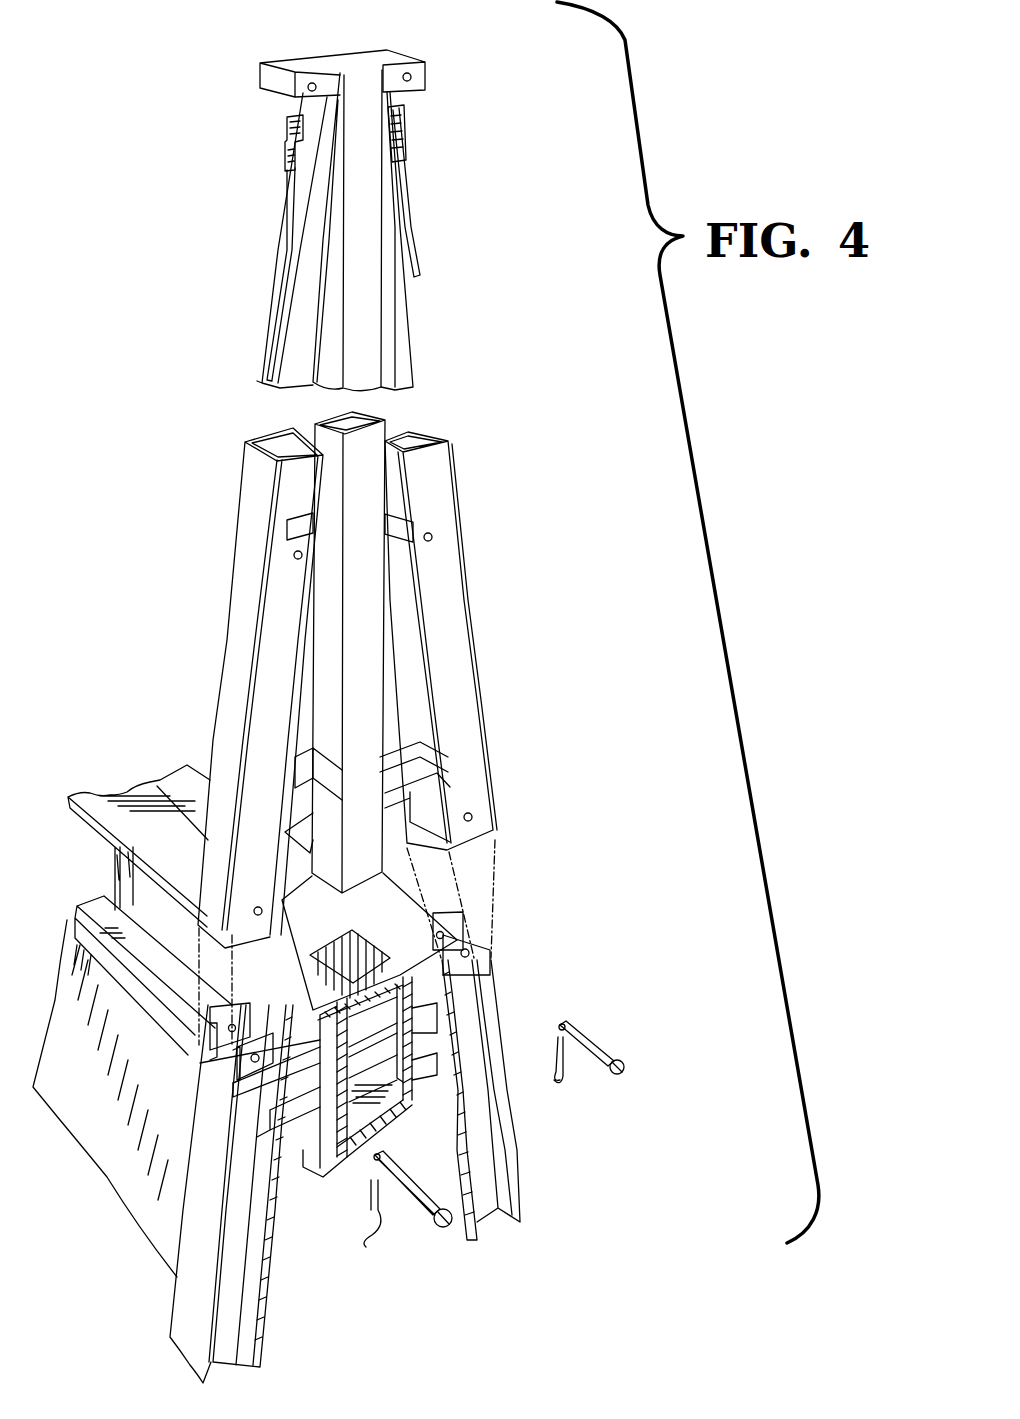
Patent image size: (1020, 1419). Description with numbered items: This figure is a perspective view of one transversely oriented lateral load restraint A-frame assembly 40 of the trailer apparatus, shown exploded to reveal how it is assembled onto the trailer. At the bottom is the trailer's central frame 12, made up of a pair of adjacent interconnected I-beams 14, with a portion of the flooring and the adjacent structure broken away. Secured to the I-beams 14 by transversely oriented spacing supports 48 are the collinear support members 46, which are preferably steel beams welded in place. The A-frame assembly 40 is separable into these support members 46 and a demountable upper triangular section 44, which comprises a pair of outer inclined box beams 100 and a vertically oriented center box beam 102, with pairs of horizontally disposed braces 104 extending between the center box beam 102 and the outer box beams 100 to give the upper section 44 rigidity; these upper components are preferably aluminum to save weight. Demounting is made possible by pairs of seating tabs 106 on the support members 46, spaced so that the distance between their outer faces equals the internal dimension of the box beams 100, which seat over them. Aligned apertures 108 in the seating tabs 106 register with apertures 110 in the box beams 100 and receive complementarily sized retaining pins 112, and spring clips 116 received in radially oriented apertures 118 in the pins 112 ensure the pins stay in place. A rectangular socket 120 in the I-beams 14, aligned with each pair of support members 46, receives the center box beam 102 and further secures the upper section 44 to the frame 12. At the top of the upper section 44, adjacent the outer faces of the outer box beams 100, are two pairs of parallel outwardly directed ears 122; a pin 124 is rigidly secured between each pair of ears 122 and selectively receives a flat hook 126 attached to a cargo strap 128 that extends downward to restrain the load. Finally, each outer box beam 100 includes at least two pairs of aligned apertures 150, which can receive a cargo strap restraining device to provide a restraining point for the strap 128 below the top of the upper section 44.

The central frame 12 is at (131, 763).
The I-beams 14 is at (152, 787).
The A-frame assembly 40 is at (663, 962).
The upper triangular section 44 is at (545, 657).
The collinear support members 46 is at (485, 1190).
The spacing supports 48 is at (430, 1020).
The outer inclined box beams 100 is at (395, 367).
The center box beam 102 is at (372, 312).
The horizontally disposed braces 104 is at (313, 567).
The seating tabs 106 is at (445, 915).
The aligned apertures 108 is at (480, 975).
The apertures 110 is at (470, 813).
The retaining pins 112 is at (597, 1043).
The spring clips 116 is at (560, 1075).
The radially oriented apertures 118 is at (563, 1020).
The rectangular socket 120 is at (360, 950).
The ears 122 is at (284, 73).
The pin 124 is at (411, 79).
The flat hook 126 is at (403, 108).
The cargo strap 128 is at (415, 208).
The aligned apertures 150 is at (296, 553).